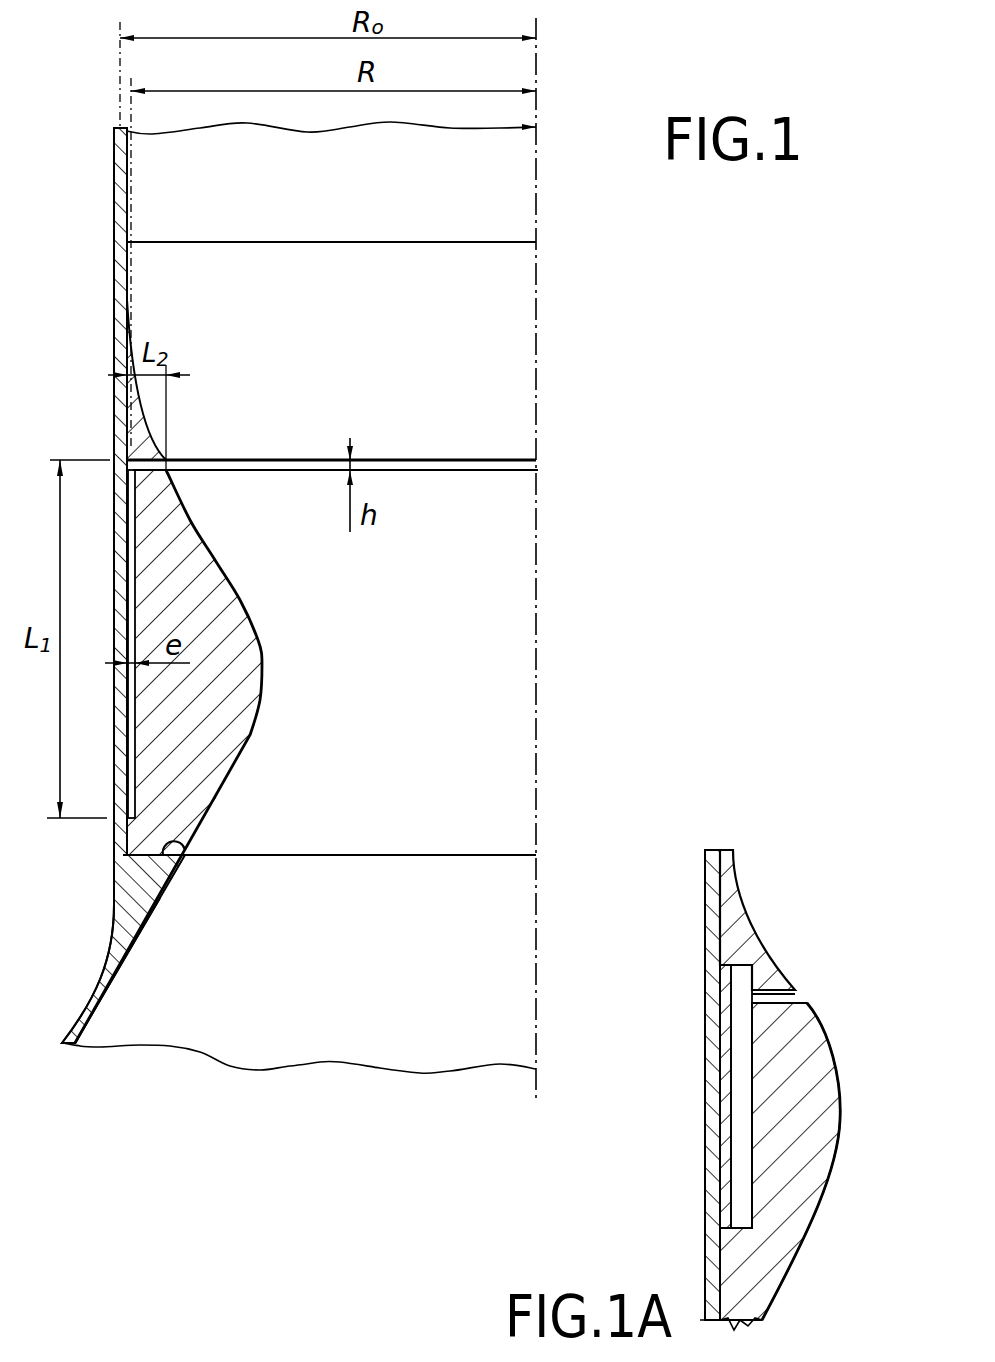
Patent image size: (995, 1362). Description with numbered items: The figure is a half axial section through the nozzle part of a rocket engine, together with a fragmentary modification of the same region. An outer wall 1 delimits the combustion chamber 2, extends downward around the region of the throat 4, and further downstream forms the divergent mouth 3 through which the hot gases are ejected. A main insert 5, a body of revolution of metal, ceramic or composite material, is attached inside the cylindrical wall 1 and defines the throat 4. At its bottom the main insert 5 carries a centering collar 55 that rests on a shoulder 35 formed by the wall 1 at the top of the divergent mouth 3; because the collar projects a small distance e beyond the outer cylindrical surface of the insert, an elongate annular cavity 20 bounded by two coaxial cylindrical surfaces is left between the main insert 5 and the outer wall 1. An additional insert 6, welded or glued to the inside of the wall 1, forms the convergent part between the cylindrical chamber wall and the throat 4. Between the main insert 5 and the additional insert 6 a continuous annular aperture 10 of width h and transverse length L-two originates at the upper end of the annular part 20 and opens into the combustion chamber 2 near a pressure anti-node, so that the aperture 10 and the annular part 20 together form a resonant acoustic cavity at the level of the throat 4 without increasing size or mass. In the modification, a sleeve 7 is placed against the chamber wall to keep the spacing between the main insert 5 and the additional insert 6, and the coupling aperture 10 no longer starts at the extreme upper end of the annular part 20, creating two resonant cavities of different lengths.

In FIG. 1, the outer wall 1 is at (122, 293).
In FIG. 1A, the outer wall 1 is at (712, 1007).
In FIG. 1, the combustion chamber 2 is at (414, 200).
In FIG. 1, the divergent mouth 3 is at (85, 1010).
In FIG. 1, the throat 4 is at (250, 734).
In FIG. 1A, the throat 4 is at (836, 1180).
In FIG. 1, the main insert 5 is at (185, 780).
In FIG. 1A, the main insert 5 is at (795, 1195).
In FIG. 1, the additional insert 6 is at (148, 405).
In FIG. 1A, the additional insert 6 is at (733, 918).
In FIG. 1A, the sleeve 7 is at (728, 1115).
In FIG. 1, the annular coupling aperture 10 is at (497, 480).
In FIG. 1A, the annular coupling aperture 10 is at (787, 997).
In FIG. 1, the main annular part of the cavity 20 is at (146, 736).
In FIG. 1A, the main annular part of the cavity 20 is at (740, 1172).
In FIG. 1, the shoulder 35 is at (186, 851).
In FIG. 1, the centering collar 55 is at (143, 838).